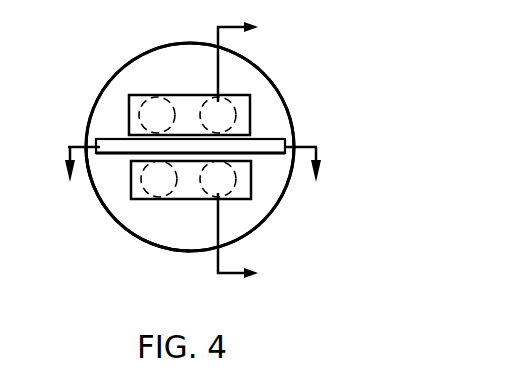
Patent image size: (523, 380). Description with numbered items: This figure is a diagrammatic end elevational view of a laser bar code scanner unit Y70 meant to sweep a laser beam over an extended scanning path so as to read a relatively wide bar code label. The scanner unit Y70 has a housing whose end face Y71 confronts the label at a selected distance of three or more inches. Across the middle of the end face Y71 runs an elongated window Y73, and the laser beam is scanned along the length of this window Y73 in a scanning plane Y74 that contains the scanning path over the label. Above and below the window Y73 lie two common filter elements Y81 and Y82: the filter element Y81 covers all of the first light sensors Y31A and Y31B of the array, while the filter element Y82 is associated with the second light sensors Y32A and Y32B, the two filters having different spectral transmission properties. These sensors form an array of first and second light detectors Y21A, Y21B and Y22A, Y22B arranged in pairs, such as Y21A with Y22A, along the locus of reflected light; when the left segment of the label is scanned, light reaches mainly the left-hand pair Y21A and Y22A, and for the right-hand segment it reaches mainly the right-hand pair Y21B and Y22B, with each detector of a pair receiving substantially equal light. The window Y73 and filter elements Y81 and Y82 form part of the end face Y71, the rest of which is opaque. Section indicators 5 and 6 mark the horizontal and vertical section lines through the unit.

The scanner unit Y70 is at (264, 49).
The end face Y71 is at (115, 222).
The elongated window Y73 is at (97, 141).
The scanning plane Y74 is at (119, 149).
The common filter element Y81 is at (250, 118).
The common filter element Y82 is at (252, 184).
The first light detector Y21A is at (112, 104).
The first light detector Y21B is at (267, 80).
The second light detector Y22A is at (101, 204).
The second light detector Y22B is at (245, 216).
The first light sensor Y31A is at (146, 104).
The first light sensor Y31B is at (204, 104).
The second light sensor Y32A is at (186, 193).
The second light sensor Y32B is at (197, 190).
The section line 5 is at (195, 152).
The section line 6 is at (229, 147).